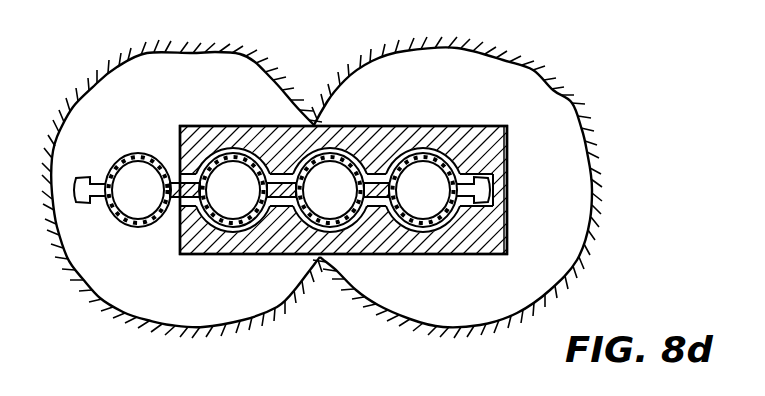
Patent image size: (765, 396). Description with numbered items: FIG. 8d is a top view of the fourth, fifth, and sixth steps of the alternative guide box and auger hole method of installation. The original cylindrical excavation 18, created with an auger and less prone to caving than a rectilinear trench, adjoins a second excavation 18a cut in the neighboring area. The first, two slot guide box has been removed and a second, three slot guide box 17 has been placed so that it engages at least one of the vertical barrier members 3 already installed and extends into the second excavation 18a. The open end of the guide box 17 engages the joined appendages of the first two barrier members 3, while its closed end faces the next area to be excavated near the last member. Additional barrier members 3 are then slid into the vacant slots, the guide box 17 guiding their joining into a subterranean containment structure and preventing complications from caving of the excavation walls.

The barrier members 3 is at (132, 154).
The three slot guide box 17 is at (416, 127).
The cylindrical excavation 18 is at (155, 75).
The excavation of an adjoining area 18a is at (550, 133).